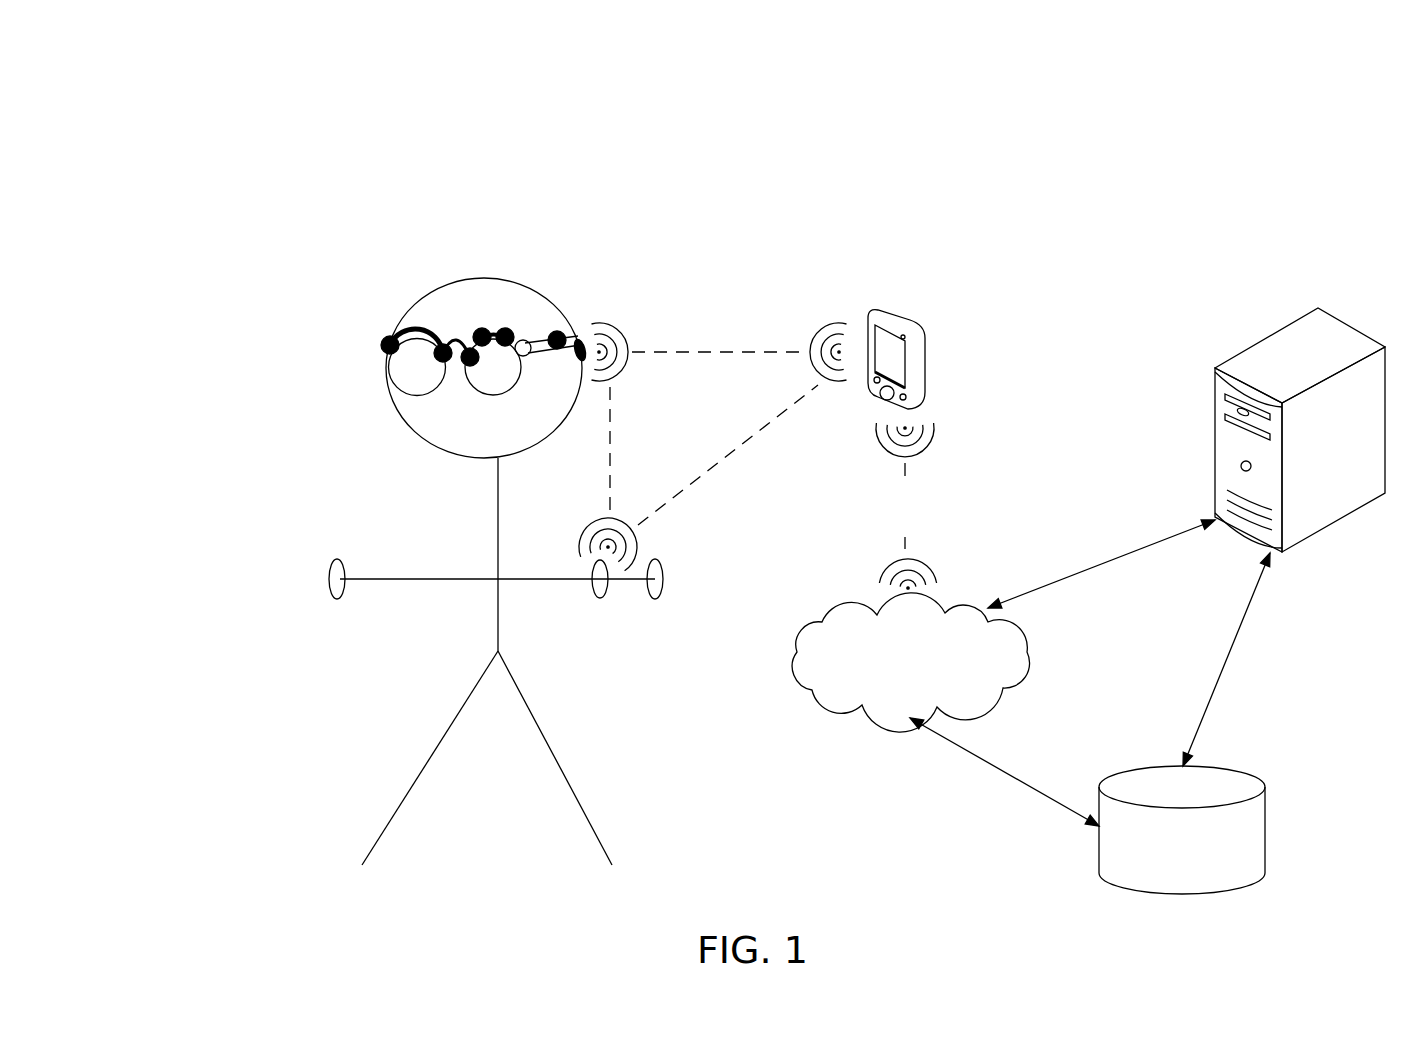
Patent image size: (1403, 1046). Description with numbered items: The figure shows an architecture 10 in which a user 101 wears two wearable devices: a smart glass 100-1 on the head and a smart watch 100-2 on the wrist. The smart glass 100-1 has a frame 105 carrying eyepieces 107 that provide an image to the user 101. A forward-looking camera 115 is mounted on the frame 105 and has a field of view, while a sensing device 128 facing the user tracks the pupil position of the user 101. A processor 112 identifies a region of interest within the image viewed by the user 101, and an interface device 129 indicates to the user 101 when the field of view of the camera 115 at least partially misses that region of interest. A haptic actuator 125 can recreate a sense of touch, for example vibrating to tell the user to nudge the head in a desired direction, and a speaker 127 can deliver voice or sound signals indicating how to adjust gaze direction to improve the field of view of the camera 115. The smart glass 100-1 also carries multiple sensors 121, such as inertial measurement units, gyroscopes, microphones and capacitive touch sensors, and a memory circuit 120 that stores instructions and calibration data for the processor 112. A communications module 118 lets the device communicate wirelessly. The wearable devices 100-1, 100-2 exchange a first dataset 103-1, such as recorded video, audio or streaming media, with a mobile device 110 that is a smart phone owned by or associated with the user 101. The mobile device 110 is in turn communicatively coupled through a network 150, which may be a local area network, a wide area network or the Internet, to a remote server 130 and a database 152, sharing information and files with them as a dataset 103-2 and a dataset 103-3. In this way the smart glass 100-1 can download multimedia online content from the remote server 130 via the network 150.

The architecture 10 is at (336, 118).
The user 101 is at (402, 799).
The smart glass 100-1 is at (471, 325).
The smart watch 100-2 is at (597, 606).
The frame 105 is at (407, 335).
The eyepieces 107 is at (467, 380).
The camera 115 is at (390, 347).
The sensors 121 is at (437, 340).
The haptic actuator 125 is at (468, 350).
The interface device 129 is at (482, 330).
The sensing device 128 is at (504, 330).
The communications module 118 is at (539, 326).
The speaker 127 is at (560, 332).
The processor 112 is at (572, 318).
The memory circuit 120 is at (578, 338).
The first dataset 103-1 is at (737, 417).
The mobile device 110 is at (923, 333).
The dataset 103-2 is at (868, 523).
The network 150 is at (883, 695).
The dataset 103-3 is at (1078, 695).
The remote server 130 is at (1358, 458).
The database 152 is at (1208, 868).